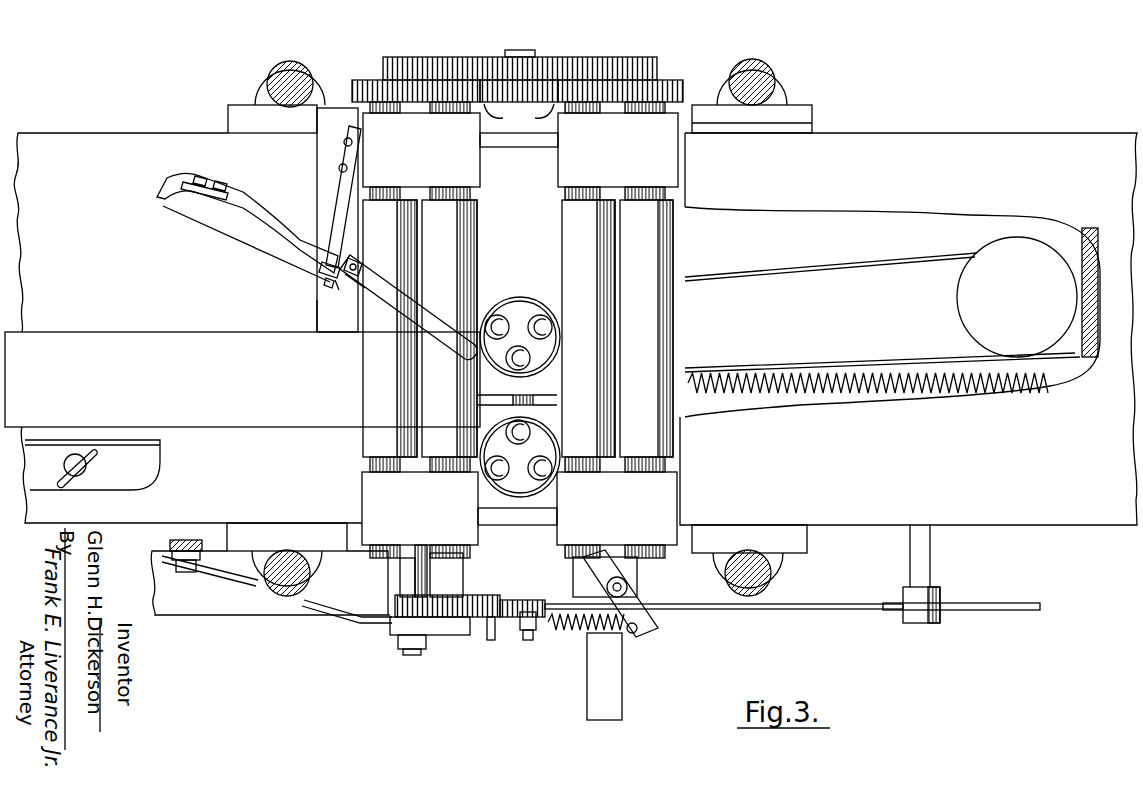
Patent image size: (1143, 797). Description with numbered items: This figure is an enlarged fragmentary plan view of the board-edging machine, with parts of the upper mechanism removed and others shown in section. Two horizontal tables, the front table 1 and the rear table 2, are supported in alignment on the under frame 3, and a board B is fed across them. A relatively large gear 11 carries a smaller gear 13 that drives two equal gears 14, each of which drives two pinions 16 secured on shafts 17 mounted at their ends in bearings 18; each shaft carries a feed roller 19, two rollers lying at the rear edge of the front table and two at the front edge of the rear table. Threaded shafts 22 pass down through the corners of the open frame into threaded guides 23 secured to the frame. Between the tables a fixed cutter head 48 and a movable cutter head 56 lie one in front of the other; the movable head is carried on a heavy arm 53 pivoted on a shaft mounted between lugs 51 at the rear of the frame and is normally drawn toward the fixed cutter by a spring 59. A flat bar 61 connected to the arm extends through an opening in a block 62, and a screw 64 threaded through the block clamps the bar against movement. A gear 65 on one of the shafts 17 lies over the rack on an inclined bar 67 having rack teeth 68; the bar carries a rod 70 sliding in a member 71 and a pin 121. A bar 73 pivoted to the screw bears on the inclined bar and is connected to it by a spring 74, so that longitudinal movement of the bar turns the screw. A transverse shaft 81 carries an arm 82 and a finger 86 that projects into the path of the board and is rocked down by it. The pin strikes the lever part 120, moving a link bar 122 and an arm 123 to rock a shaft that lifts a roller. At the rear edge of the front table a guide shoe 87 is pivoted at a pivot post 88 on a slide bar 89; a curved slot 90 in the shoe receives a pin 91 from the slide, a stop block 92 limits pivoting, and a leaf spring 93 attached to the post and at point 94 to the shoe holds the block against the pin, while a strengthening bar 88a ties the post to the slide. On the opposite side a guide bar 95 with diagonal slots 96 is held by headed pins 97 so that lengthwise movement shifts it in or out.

The front table 1 is at (82, 146).
The rear table 2 is at (962, 148).
The under frame 3 is at (1097, 264).
The board B is at (128, 354).
The large gear 11 is at (478, 62).
The smaller gear 13 is at (522, 92).
The gears 14 is at (519, 105).
The pinions 16 is at (397, 86).
The shafts 17 is at (447, 569).
The bearings 18 is at (470, 166).
The roller 19 is at (410, 234).
The shafts 22 is at (284, 66).
The guides 23 is at (298, 58).
The cutter head 48 is at (548, 450).
The lugs 51 is at (1050, 240).
The arm 53 is at (840, 274).
The cutter head 56 is at (522, 302).
The spring 59 is at (906, 392).
The flat bar 61 is at (612, 680).
The block 62 is at (573, 569).
The screw 64 is at (604, 556).
The gear 65 is at (478, 620).
The bar 67 is at (776, 611).
The rack teeth 68 is at (520, 618).
The rod 70 is at (942, 611).
The member 71 is at (926, 596).
The bar 73 is at (644, 622).
The spring 74 is at (574, 634).
The shaft 81 is at (408, 650).
The arm 82 is at (530, 642).
The finger 86 is at (535, 400).
The guide shoe 87 is at (397, 318).
The pivot post 88 is at (325, 270).
The strengthening bar 88a is at (343, 192).
The slide bar 89 is at (318, 320).
The curved slot 90 is at (337, 284).
The pin 91 is at (363, 285).
The stop block 92 is at (361, 266).
The leaf spring 93 is at (268, 232).
The spring attachment point 94 is at (205, 200).
The guide bar 95 is at (116, 478).
The diagonal slots 96 is at (96, 452).
The headed pins 97 is at (73, 453).
The lever part 120 is at (437, 637).
The pin 121 is at (491, 642).
The link bar 122 is at (353, 624).
The arm 123 is at (190, 540).